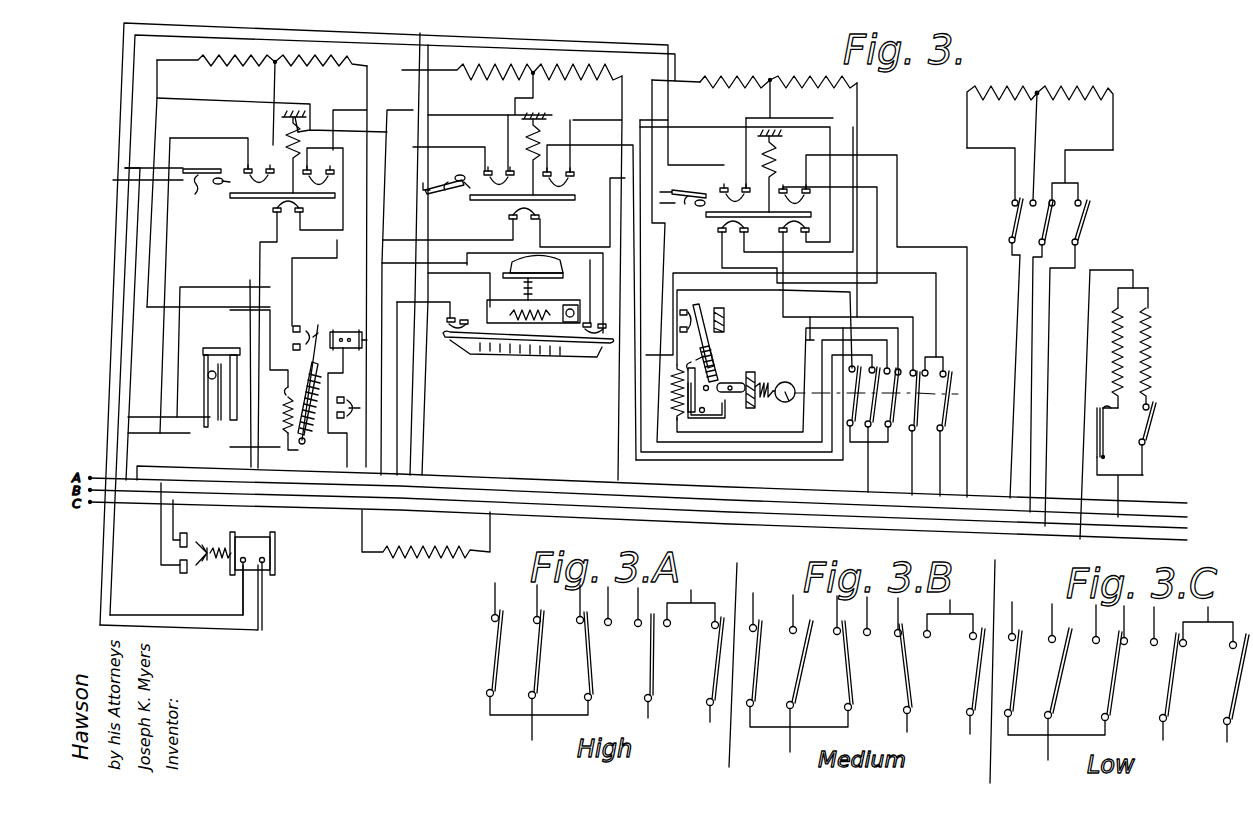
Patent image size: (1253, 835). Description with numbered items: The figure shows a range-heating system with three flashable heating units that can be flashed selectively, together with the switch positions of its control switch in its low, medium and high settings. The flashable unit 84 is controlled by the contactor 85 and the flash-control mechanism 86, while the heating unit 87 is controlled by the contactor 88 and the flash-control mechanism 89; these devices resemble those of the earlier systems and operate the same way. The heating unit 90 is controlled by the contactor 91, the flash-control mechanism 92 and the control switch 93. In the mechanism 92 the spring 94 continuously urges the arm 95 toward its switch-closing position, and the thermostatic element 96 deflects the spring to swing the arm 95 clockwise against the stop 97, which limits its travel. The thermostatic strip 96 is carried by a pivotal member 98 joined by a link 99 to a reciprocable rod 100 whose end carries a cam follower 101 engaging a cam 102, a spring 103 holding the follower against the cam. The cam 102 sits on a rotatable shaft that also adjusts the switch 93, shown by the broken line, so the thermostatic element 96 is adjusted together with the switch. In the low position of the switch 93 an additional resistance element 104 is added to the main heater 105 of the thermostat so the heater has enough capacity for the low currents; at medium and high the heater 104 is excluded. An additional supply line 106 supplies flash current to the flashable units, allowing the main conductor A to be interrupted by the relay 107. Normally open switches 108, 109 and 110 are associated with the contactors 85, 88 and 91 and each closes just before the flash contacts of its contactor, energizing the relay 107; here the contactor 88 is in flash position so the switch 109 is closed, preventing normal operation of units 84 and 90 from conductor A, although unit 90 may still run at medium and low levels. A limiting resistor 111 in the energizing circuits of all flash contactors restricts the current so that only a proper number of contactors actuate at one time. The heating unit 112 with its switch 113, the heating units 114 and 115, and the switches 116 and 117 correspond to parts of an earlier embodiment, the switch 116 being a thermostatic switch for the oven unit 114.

The flashable heating unit 84 is at (290, 55).
The contactor 85 is at (262, 133).
The flash-control mechanism 86 is at (284, 393).
The heating unit 87 is at (548, 66).
The contactor 88 is at (502, 145).
The flash-control mechanism 89 is at (590, 293).
The heating unit 90 is at (790, 75).
The contactor 91 is at (739, 163).
The flash-control mechanism 92 is at (755, 356).
The control switch 93 is at (940, 423).
The spring 94 is at (742, 373).
The arm 95 is at (713, 351).
The thermostatic element 96 is at (690, 365).
The stop 97 is at (726, 318).
The pivotal member 98 is at (712, 415).
The link 99 is at (732, 383).
The reciprocable rod 100 is at (752, 403).
The cam follower 101 is at (785, 384).
The cam 102 is at (792, 402).
The spring 103 is at (784, 365).
The additional resistance element 104 is at (675, 412).
The main heater 105 is at (668, 387).
The additional supply line 106 is at (662, 480).
The relay 107 is at (240, 529).
The normally open switch 108 is at (207, 186).
The normally open switch 109 is at (458, 192).
The normally open switch 110 is at (697, 206).
The limiting resistor 111 is at (409, 557).
The heating unit 112 is at (1055, 83).
The switch 113 is at (1120, 224).
The oven unit 114 is at (1123, 342).
The heating unit 115 is at (1152, 368).
The thermostatic switch 116 is at (1105, 427).
The switch 117 is at (1150, 431).